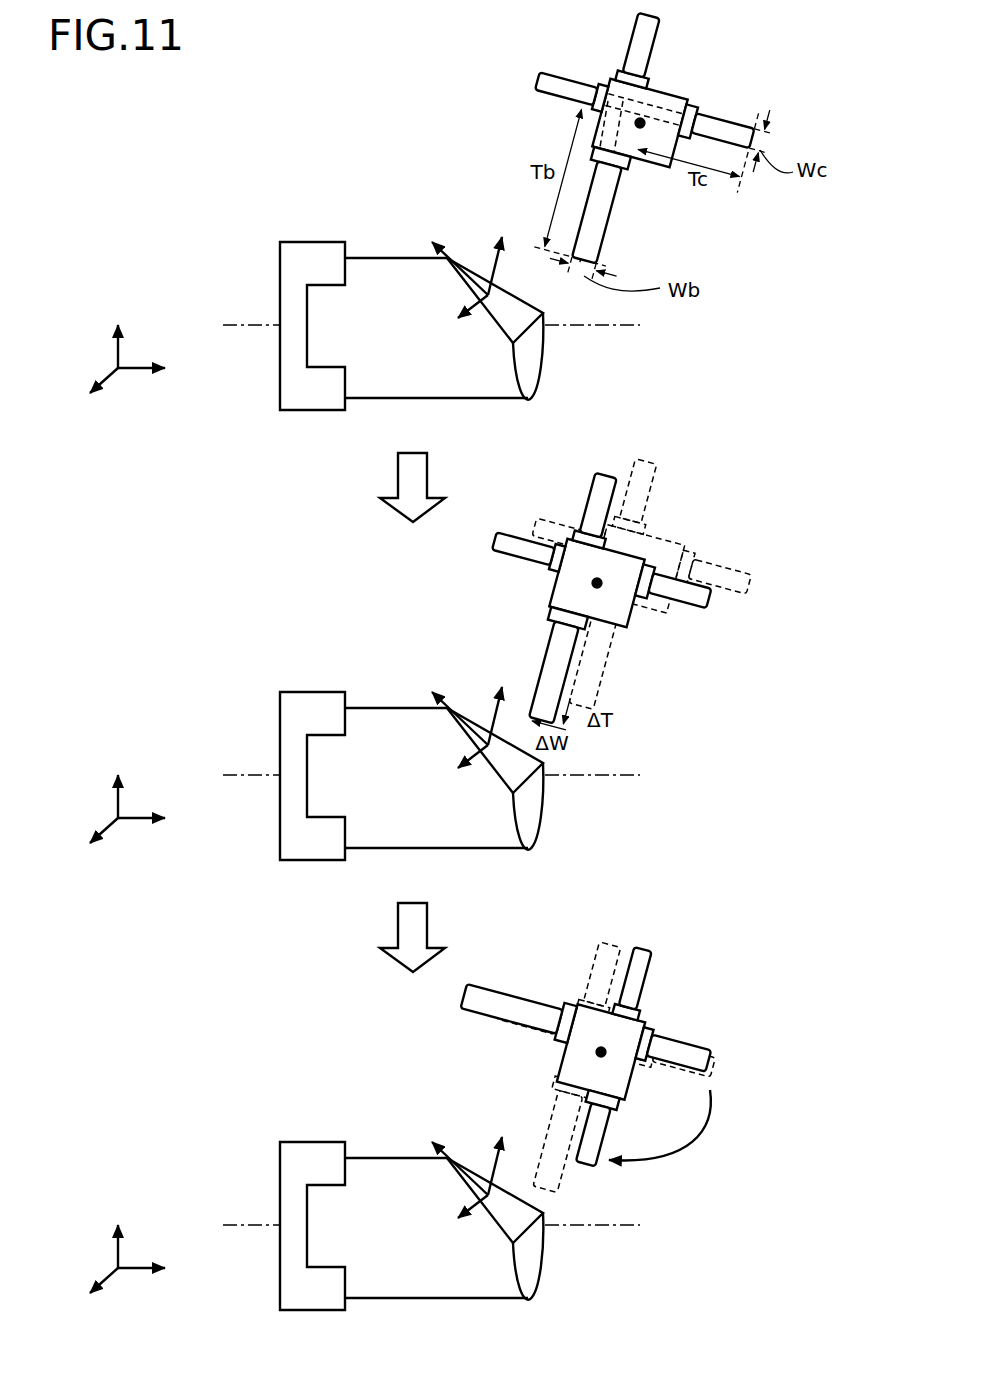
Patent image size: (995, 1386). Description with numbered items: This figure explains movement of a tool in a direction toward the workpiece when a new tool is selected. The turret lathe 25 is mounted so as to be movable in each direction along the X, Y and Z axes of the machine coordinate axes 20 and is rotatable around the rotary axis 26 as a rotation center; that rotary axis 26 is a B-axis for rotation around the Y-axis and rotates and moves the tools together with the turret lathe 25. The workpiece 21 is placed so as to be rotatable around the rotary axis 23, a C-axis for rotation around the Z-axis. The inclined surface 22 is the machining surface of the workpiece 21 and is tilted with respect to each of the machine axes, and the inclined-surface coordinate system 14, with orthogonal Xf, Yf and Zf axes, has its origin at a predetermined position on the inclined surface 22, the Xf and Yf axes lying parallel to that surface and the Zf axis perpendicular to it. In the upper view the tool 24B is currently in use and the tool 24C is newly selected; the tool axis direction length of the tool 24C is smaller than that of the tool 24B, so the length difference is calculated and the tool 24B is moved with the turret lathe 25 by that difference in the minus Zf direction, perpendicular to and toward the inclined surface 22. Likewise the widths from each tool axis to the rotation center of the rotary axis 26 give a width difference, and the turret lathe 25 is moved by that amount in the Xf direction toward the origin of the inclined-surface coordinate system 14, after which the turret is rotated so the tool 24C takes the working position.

The inclined-surface coordinate system 14 is at (468, 246).
The machine coordinate axes 20 is at (97, 350).
The workpiece 21 is at (365, 260).
The inclined surface 22 is at (514, 305).
The rotary axis 23 is at (620, 330).
The tool 24B is at (598, 221).
The tool 24C is at (728, 122).
The turret lathe 25 is at (666, 100).
The rotary axis 26 is at (639, 117).